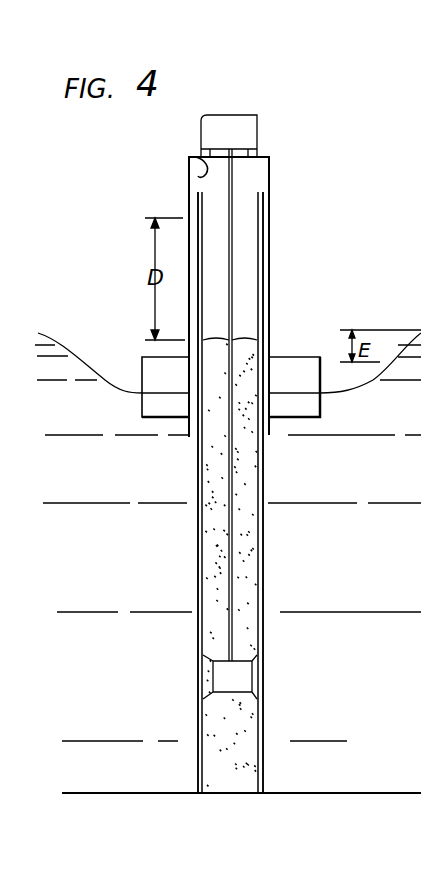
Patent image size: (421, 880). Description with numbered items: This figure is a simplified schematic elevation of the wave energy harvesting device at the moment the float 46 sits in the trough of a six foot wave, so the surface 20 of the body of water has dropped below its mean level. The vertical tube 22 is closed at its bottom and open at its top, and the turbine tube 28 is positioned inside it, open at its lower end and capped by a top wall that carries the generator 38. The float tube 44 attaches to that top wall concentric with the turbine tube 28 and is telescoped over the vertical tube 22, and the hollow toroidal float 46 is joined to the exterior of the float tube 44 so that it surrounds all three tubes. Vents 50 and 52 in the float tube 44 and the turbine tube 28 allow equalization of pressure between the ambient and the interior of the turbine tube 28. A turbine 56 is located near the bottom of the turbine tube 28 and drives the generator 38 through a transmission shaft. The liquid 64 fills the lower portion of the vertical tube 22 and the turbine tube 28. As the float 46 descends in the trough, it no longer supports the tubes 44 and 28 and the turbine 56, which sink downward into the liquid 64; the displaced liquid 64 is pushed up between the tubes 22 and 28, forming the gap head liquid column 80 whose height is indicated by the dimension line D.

The surface of the body of water 20 is at (373, 380).
The vertical tube 22 is at (267, 713).
The turbine tube 28 is at (250, 258).
The generator 38 is at (245, 128).
The float tube 44 is at (272, 188).
The float 46 is at (148, 362).
The vent 50 is at (190, 174).
The vent 52 is at (200, 163).
The turbine 56 is at (238, 690).
The liquid 64 is at (230, 562).
The gap head liquid column 80 is at (262, 276).